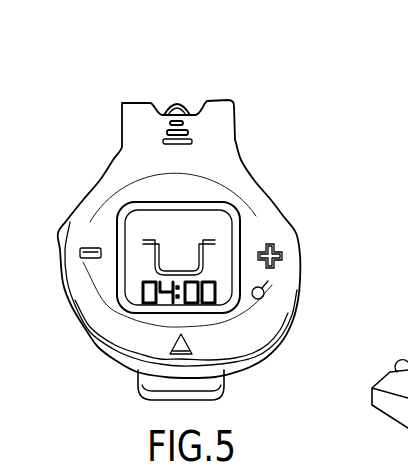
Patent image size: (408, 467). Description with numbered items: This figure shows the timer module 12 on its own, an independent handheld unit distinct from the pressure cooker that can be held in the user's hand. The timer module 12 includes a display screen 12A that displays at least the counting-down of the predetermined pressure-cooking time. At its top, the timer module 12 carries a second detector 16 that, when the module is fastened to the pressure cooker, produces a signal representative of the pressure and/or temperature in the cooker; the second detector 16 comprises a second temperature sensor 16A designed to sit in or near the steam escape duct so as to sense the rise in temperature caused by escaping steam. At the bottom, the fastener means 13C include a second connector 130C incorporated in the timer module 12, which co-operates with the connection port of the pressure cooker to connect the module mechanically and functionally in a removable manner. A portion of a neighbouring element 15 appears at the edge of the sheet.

The timer module 12 is at (296, 190).
The display screen 12A is at (143, 232).
The second detector 16 is at (184, 102).
The second temperature sensor 16A is at (168, 105).
The fastener means 13C is at (234, 387).
The second connector 130C is at (137, 390).
The charging dock 15 is at (403, 363).